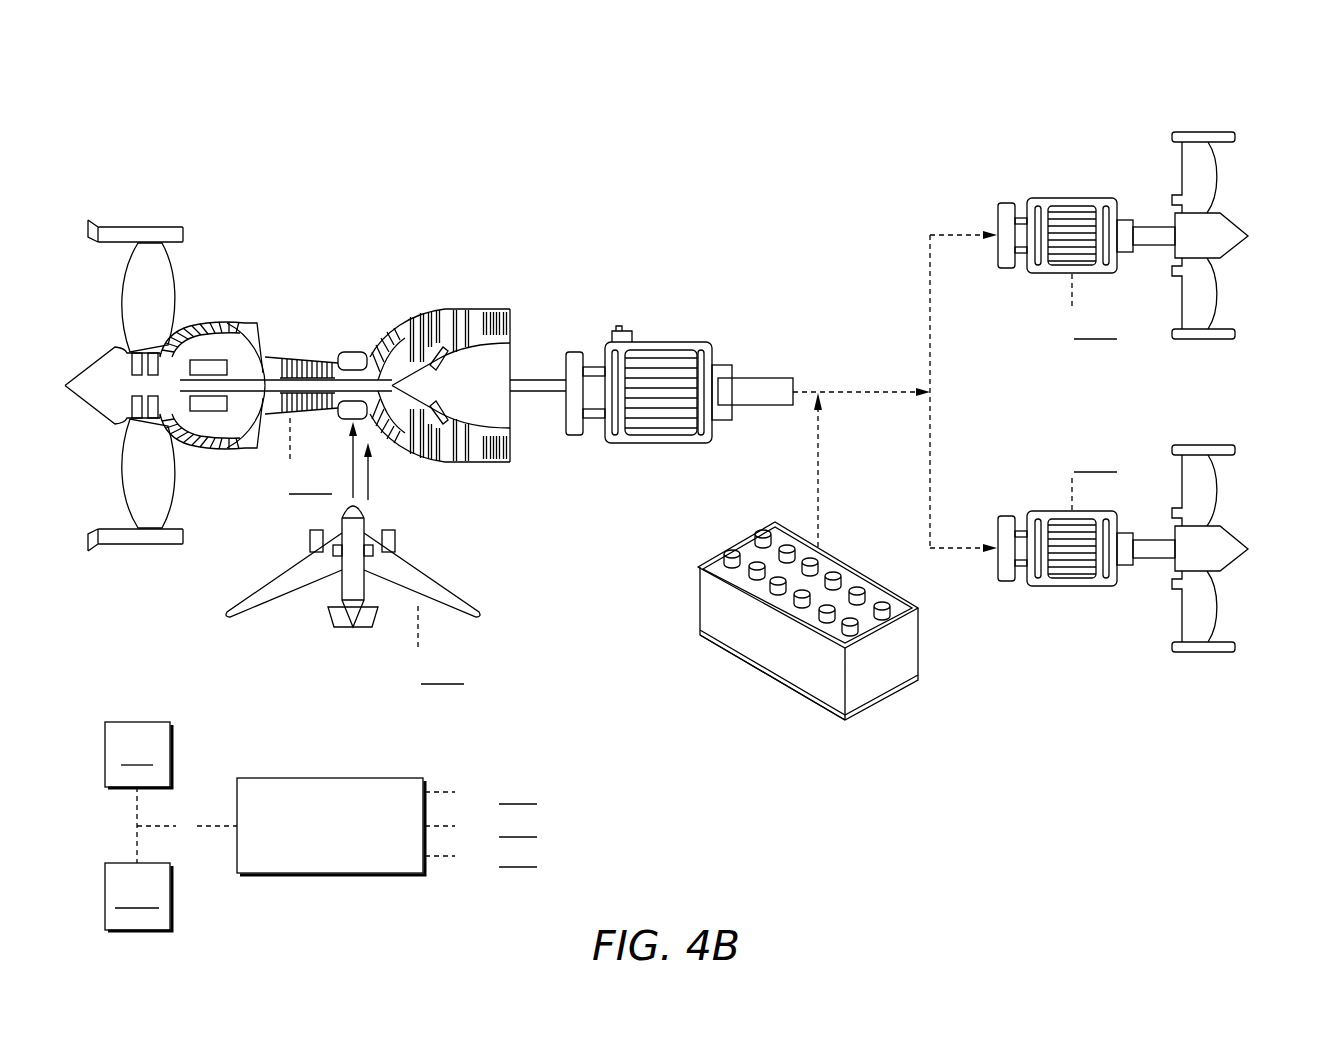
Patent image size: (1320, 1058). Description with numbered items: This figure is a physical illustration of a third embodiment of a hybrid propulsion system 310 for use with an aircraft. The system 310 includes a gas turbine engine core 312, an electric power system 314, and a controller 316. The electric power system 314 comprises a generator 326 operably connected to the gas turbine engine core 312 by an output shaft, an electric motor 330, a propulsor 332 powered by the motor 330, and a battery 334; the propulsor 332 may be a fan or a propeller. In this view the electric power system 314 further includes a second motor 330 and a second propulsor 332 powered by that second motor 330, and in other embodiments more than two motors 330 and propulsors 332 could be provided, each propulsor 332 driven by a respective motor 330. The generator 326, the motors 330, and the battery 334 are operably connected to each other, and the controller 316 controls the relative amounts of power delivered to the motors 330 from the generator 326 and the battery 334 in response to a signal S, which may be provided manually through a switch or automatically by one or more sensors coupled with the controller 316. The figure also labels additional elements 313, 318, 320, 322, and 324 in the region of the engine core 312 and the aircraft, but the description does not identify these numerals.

The hybrid propulsion system 310 is at (136, 133).
The gas turbine engine core 312 is at (353, 240).
The fan / propeller 313 is at (169, 560).
The electric power system 314 is at (1247, 95).
The controller 316 is at (347, 875).
The compressor section / nacelle 318 is at (263, 337).
The clutch / coupling 320 is at (352, 352).
The combustor and turbine section 322 is at (477, 307).
The aircraft 324 is at (290, 612).
The generator 326 is at (660, 342).
The electric motor 330 is at (1073, 198).
The propulsor 332 is at (1217, 176).
The battery 334 is at (763, 682).